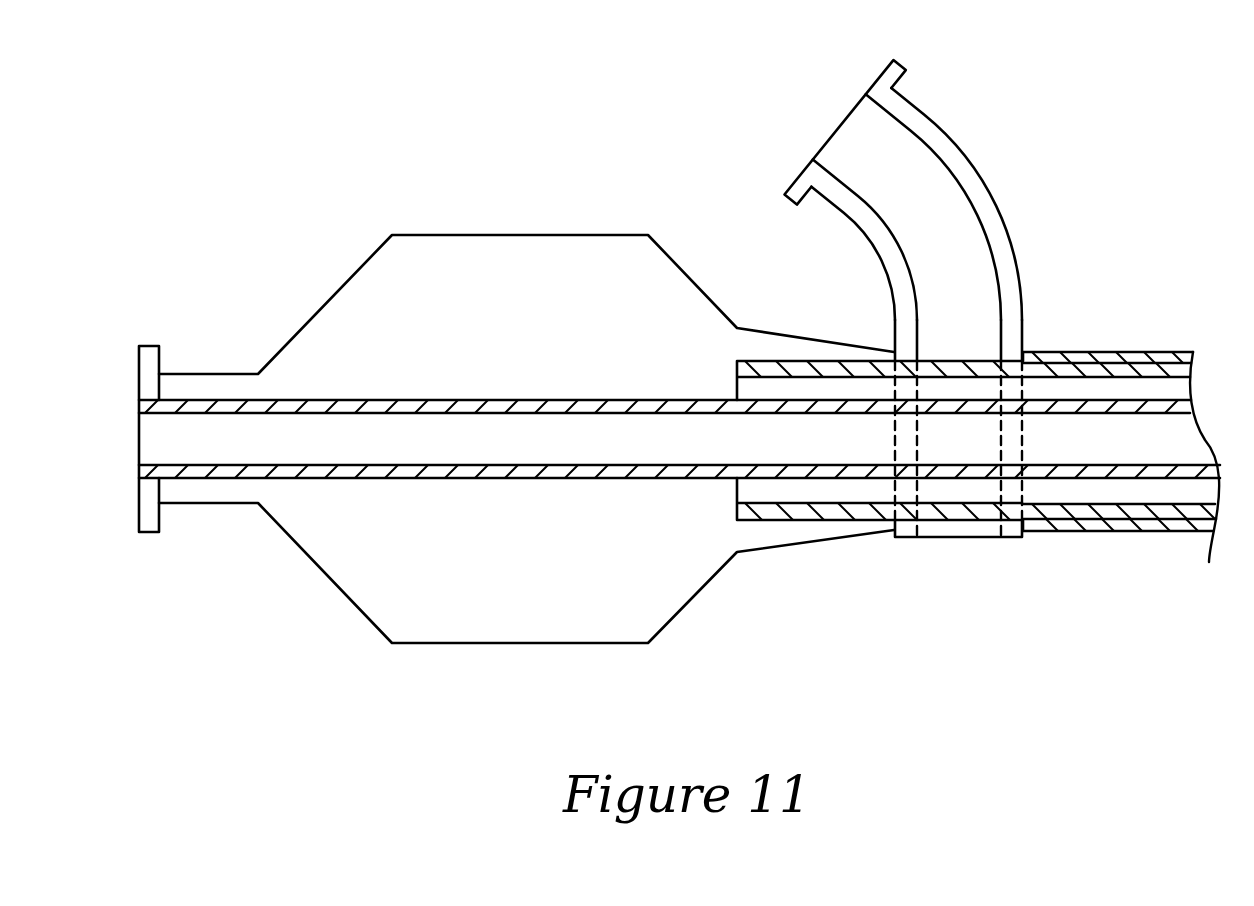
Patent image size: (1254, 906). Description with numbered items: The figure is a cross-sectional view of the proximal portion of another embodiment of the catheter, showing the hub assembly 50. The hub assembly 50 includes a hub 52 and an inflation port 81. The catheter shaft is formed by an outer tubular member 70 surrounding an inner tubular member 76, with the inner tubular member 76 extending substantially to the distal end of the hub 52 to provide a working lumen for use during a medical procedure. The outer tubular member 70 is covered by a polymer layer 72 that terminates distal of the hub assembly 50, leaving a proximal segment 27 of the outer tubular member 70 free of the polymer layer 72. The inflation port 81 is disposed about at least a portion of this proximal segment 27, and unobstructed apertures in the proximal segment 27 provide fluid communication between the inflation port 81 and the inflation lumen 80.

The hub assembly 50 is at (722, 105).
The hub 52 is at (522, 643).
The proximal segment 27 is at (966, 357).
The inflation port 81 is at (942, 216).
The inflation lumen 80 is at (1084, 390).
The inner tubular member 76 is at (1146, 412).
The outer tubular member 70 is at (1075, 512).
The polymer layer 72 is at (1175, 520).